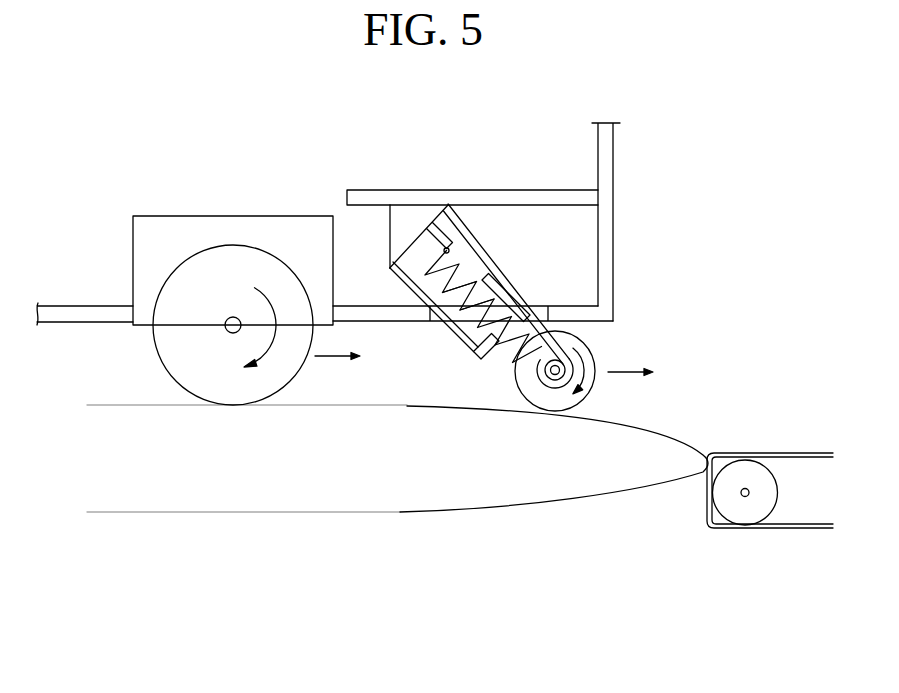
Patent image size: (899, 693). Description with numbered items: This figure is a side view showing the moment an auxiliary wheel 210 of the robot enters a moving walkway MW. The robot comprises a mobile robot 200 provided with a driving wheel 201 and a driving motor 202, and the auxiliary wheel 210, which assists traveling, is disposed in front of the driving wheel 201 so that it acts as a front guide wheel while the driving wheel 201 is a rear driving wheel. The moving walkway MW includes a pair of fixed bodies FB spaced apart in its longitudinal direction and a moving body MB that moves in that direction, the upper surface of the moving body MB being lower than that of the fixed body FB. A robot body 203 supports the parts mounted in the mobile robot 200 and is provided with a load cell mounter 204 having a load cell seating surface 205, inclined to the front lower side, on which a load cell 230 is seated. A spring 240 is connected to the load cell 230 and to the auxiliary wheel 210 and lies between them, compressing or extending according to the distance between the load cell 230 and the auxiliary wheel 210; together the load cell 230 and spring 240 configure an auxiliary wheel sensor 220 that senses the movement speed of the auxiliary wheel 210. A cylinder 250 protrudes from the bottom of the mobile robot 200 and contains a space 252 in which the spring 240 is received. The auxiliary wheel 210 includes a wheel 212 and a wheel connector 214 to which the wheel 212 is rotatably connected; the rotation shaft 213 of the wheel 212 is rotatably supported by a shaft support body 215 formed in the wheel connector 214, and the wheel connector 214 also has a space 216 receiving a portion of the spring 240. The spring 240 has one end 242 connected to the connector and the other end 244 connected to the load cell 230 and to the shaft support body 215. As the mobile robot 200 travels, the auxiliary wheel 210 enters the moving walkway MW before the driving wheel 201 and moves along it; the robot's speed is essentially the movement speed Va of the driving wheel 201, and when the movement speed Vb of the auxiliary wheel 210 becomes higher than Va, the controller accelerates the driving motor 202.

The mobile robot 200 is at (636, 153).
The driving wheel 201 is at (203, 270).
The driving motor 202 is at (263, 230).
The robot body 203 is at (607, 197).
The load cell mounter 204 is at (419, 222).
The load cell seating surface 205 is at (412, 244).
The auxiliary wheel 210 is at (688, 270).
The wheel 212 is at (577, 346).
The rotation shaft 213 is at (555, 378).
The wheel connector 214 is at (565, 342).
The shaft support body 215 is at (538, 380).
The space 216 is at (487, 303).
The auxiliary wheel sensor 220 is at (473, 132).
The load cell 230 is at (437, 242).
The spring 240 is at (452, 265).
The one end of the spring 242 is at (416, 282).
The other end of the spring 244 is at (530, 390).
The cylinder 250 is at (490, 337).
The space 252 is at (450, 293).
The fixed body FB is at (647, 472).
The moving body MB is at (795, 455).
The moving walkway MW is at (642, 613).
The movement speed of the driving wheel Va is at (330, 360).
The movement speed of the auxiliary wheel Vb is at (625, 376).